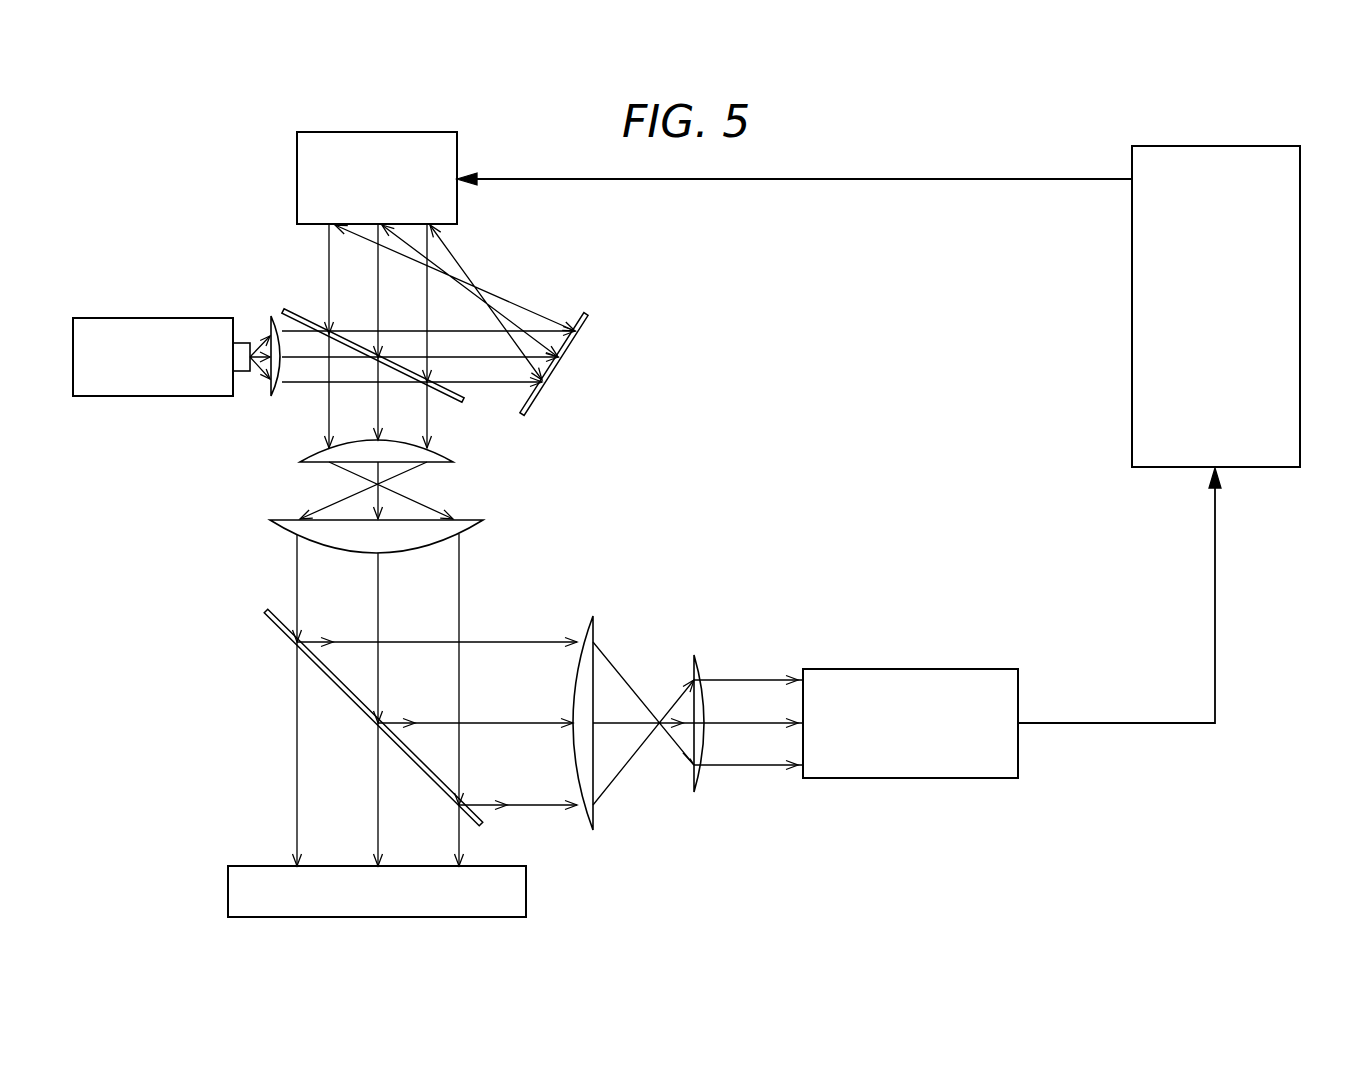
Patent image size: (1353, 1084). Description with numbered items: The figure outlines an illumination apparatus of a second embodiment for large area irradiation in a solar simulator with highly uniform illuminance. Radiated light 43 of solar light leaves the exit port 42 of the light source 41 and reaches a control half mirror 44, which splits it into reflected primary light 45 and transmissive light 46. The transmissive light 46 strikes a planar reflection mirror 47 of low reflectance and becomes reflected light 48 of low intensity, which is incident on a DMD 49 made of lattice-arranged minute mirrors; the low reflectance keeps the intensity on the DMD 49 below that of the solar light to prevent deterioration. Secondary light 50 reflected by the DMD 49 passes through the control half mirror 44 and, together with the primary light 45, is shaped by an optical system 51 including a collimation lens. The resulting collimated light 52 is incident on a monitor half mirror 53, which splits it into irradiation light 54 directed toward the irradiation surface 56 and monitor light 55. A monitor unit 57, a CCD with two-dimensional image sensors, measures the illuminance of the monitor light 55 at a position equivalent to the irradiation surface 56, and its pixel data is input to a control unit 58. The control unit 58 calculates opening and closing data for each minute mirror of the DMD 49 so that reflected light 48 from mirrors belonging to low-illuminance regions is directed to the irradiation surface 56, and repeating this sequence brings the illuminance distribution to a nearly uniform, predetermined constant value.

The light source 41 is at (172, 318).
The exit port 42 is at (242, 342).
The radiated light 43 is at (298, 382).
The control half mirror 44 is at (462, 402).
The primary light 45 is at (328, 422).
The transmissive light 46 is at (494, 384).
The planar reflection mirror 47 is at (592, 318).
The reflected light 48 is at (526, 290).
The DMD 49 is at (408, 132).
The secondary light 50 is at (327, 250).
The optical system 51 is at (450, 490).
The collimated light 52 is at (460, 578).
The monitor half mirror 53 is at (320, 676).
The irradiation light 54 is at (296, 760).
The monitor light 55 is at (540, 640).
The irradiation surface 56 is at (517, 884).
The monitor unit 57 is at (950, 669).
The control unit 58 is at (1245, 146).